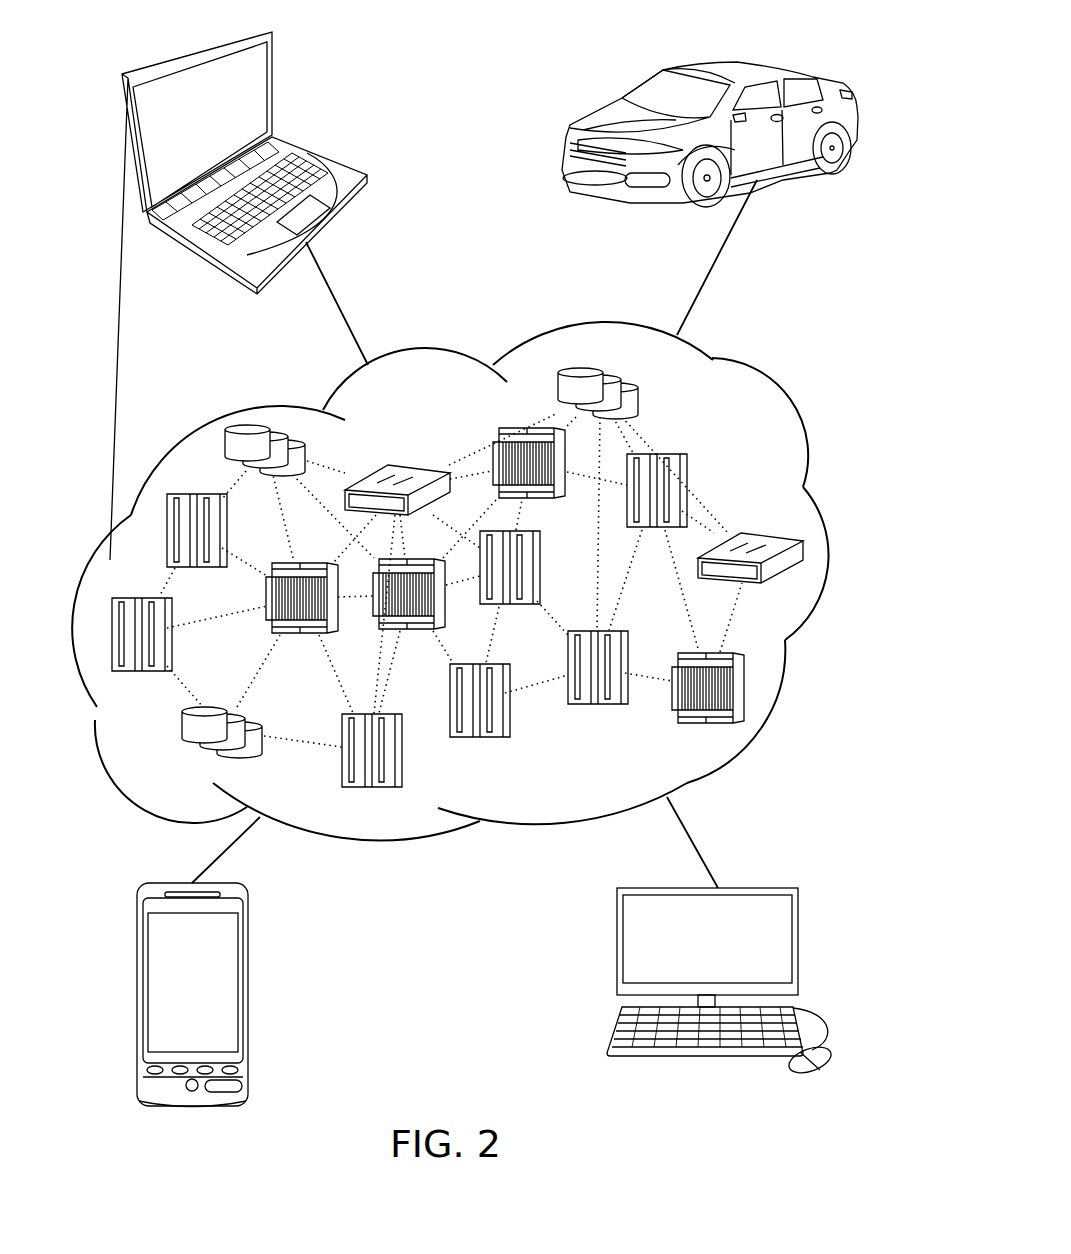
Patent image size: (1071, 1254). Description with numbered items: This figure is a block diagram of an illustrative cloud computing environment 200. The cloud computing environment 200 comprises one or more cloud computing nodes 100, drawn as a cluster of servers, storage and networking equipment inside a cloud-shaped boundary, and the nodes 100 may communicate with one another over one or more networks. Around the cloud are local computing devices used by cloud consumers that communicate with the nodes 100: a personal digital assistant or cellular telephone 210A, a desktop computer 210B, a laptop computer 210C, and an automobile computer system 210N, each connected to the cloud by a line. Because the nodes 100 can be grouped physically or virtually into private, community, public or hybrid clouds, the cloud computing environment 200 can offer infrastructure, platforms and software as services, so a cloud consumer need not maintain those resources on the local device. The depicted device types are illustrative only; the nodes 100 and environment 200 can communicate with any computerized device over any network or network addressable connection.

The cloud computing node 100 is at (773, 516).
The cloud computing environment 200 is at (455, 534).
The personal digital assistant or cellular telephone 210A is at (285, 888).
The desktop computer 210B is at (837, 883).
The laptop computer 210C is at (370, 136).
The automobile computer system 210N is at (812, 75).